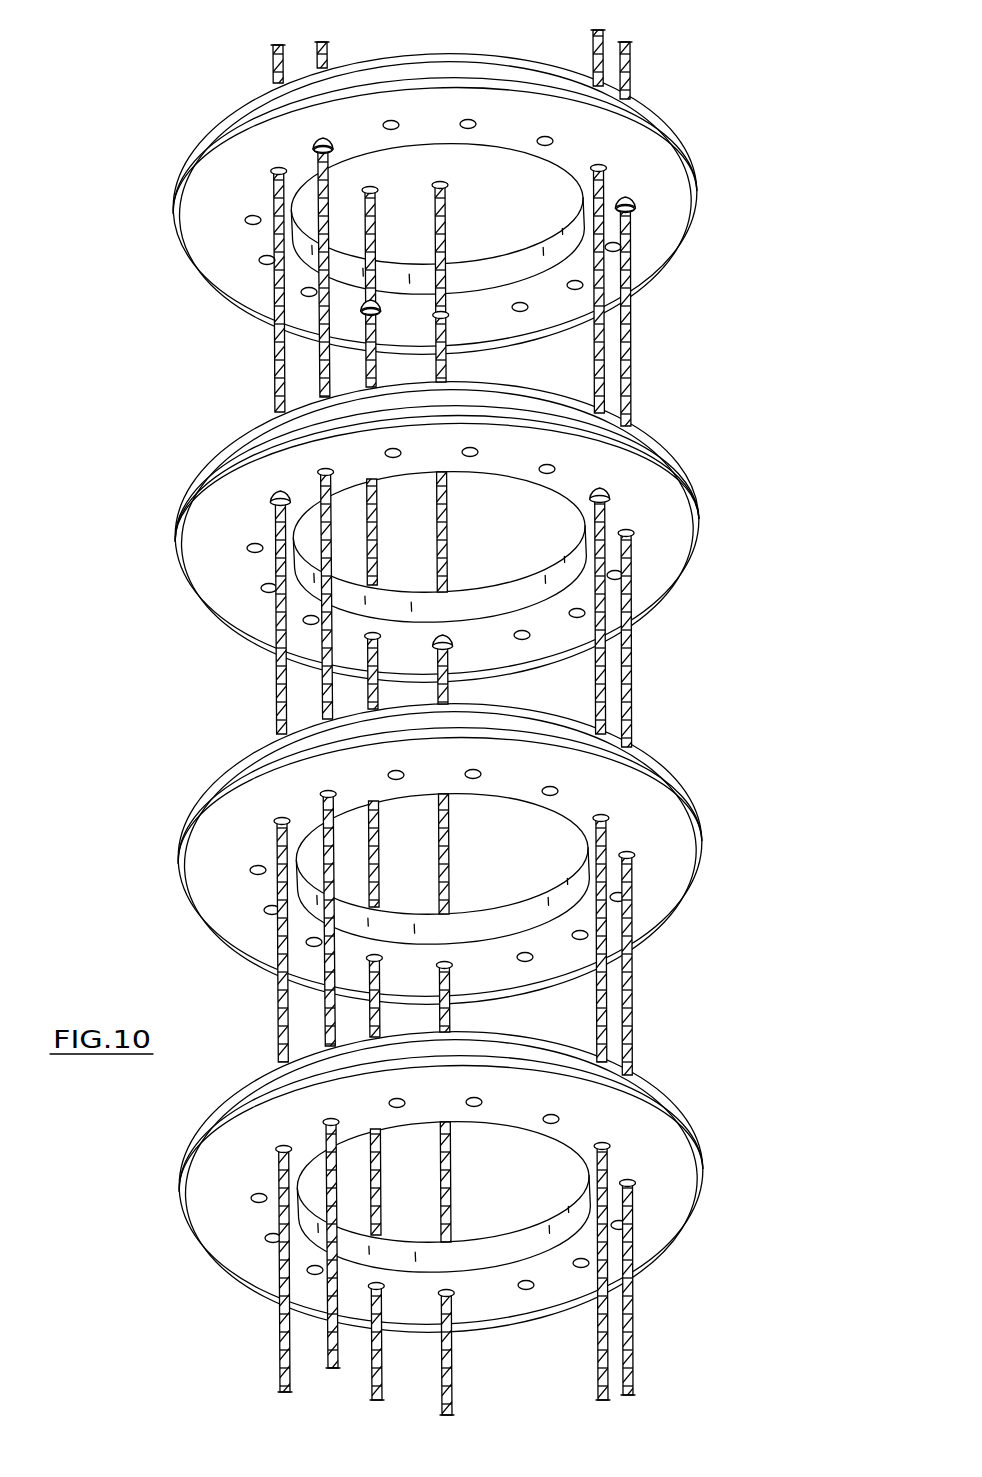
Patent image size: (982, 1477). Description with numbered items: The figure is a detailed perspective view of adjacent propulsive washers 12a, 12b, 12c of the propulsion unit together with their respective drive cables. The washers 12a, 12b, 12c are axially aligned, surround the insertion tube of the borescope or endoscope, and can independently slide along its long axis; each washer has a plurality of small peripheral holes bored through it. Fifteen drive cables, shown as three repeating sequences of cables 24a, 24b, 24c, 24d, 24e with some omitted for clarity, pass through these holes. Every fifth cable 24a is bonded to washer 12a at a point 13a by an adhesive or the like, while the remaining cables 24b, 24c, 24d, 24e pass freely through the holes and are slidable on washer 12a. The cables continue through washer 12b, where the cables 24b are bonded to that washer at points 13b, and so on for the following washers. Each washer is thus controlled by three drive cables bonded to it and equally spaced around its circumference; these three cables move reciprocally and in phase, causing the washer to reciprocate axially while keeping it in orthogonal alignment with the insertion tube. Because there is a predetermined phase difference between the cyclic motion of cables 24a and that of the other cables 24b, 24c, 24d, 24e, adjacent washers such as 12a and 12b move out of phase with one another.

The washer 12a is at (710, 264).
The washer 12b is at (712, 612).
The washer 12c is at (712, 866).
The bonding point 13a is at (607, 205).
The bonding point 13b is at (270, 489).
The drive cable 24a is at (324, 146).
The drive cable 24b is at (276, 170).
The drive cable 24c is at (548, 140).
The drive cable 24d is at (469, 122).
The drive cable 24e is at (393, 124).